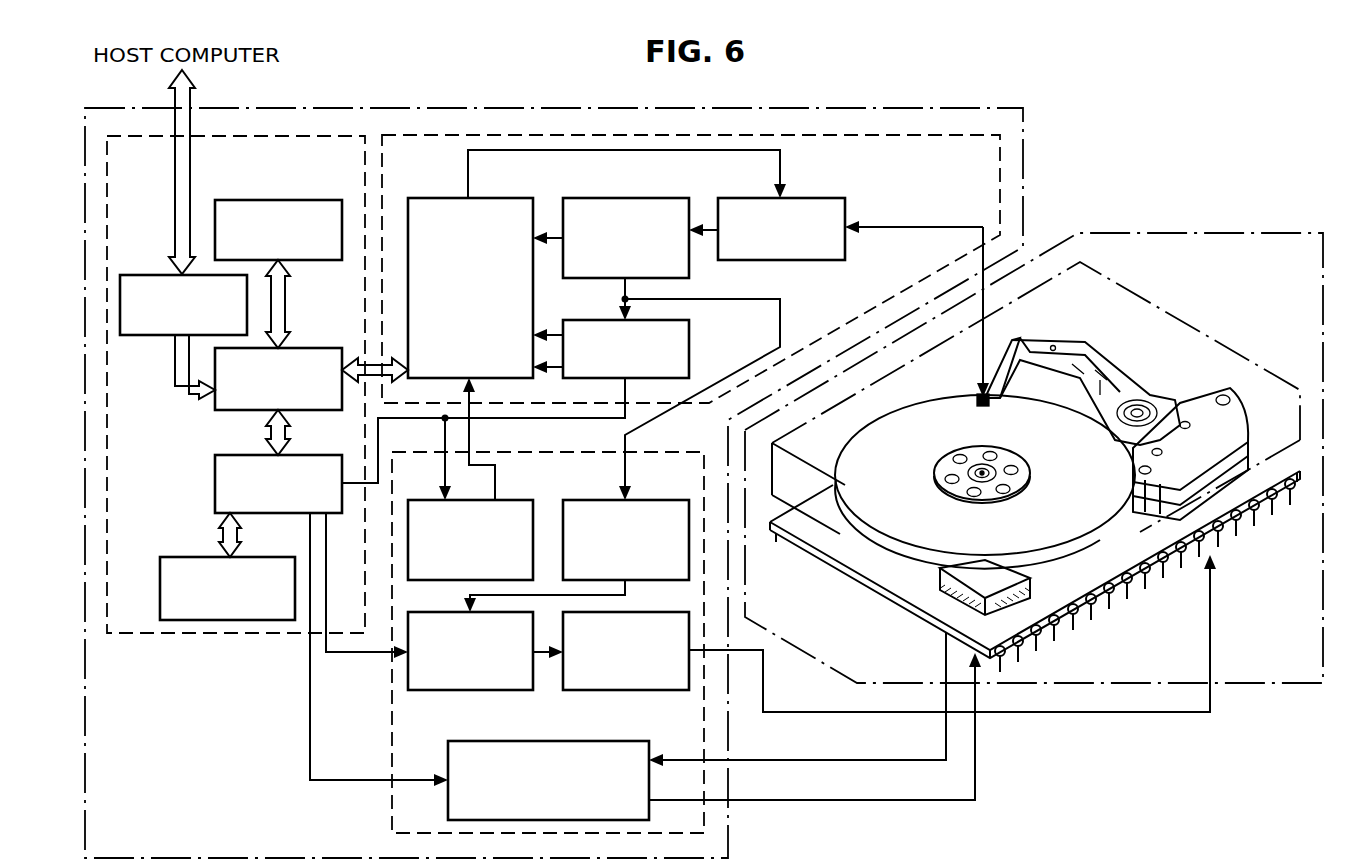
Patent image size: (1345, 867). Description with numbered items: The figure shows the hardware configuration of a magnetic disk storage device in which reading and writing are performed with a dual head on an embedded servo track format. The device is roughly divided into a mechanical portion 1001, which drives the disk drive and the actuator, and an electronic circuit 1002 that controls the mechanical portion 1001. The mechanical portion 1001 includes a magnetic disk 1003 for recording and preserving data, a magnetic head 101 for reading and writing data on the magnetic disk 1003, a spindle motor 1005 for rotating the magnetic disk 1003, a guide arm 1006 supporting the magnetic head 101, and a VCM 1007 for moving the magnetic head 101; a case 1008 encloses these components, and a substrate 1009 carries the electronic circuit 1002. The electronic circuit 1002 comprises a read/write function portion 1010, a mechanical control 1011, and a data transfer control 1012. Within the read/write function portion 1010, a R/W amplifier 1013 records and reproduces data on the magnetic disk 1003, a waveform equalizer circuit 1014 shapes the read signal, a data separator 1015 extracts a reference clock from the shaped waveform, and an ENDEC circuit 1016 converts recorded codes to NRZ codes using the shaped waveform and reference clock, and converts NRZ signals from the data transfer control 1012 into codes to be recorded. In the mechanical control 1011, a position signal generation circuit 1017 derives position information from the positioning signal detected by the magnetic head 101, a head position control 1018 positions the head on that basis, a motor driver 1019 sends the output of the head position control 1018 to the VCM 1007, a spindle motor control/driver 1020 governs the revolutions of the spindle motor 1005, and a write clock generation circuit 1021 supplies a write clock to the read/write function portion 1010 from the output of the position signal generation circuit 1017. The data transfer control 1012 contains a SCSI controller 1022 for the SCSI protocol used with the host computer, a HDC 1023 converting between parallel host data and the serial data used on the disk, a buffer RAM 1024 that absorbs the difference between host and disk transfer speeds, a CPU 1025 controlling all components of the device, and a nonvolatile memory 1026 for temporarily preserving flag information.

The magnetic head 101 is at (981, 409).
The mechanical portion 1001 is at (1269, 232).
The electronic circuit 1002 is at (1023, 142).
The magnetic disk 1003 is at (905, 373).
The spindle motor 1005 is at (1032, 471).
The guide arm 1006 is at (1084, 349).
The VCM (Voice Coil Motor) 1007 is at (1188, 397).
The case 1008 is at (1220, 338).
The substrate 1009 is at (868, 584).
The read/write function portion 1010 is at (1000, 178).
The mechanical control 1011 is at (391, 810).
The data transfer control 1012 is at (133, 636).
The R/W amplifier 1013 is at (806, 202).
The waveform equalizer circuit 1014 is at (626, 198).
The data separator 1015 is at (690, 337).
The ENDEC (Encode/Decode) circuit 1016 is at (491, 198).
The position signal generation circuit 1017 is at (652, 503).
The head position control 1018 is at (443, 691).
The motor driver 1019 is at (655, 691).
The spindle motor control/driver 1020 is at (544, 741).
The write clock generation circuit 1021 is at (517, 503).
The SCSI controller 1022 is at (152, 336).
The HDC (Hard Disk Controller) 1023 is at (318, 348).
The buffer RAM 1024 is at (303, 200).
The CPU 1025 is at (214, 479).
The nonvolatile memory 1026 is at (176, 558).